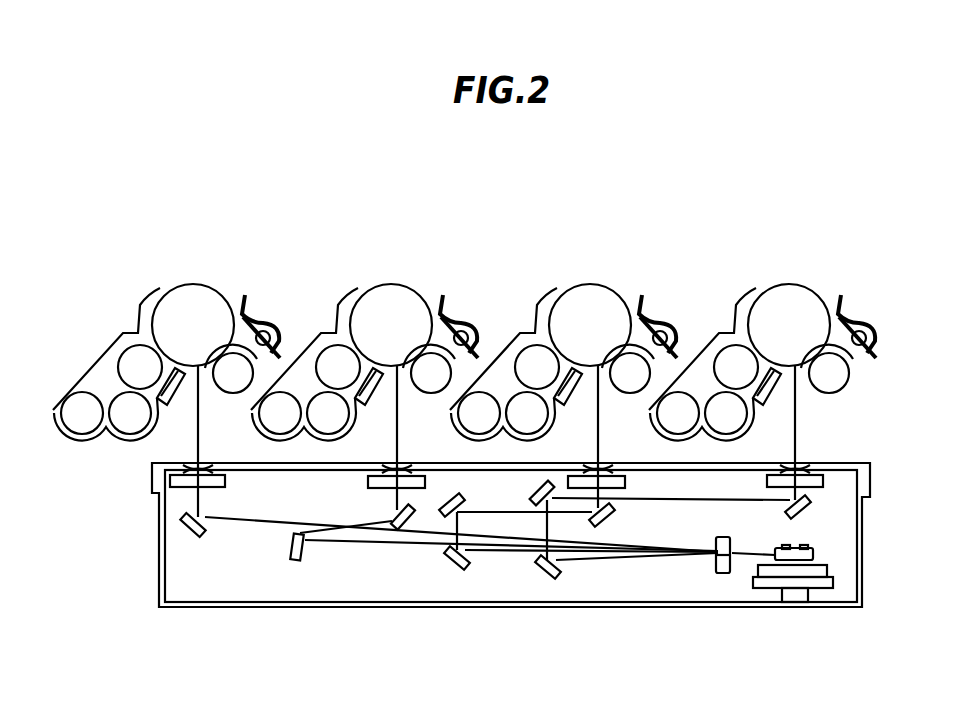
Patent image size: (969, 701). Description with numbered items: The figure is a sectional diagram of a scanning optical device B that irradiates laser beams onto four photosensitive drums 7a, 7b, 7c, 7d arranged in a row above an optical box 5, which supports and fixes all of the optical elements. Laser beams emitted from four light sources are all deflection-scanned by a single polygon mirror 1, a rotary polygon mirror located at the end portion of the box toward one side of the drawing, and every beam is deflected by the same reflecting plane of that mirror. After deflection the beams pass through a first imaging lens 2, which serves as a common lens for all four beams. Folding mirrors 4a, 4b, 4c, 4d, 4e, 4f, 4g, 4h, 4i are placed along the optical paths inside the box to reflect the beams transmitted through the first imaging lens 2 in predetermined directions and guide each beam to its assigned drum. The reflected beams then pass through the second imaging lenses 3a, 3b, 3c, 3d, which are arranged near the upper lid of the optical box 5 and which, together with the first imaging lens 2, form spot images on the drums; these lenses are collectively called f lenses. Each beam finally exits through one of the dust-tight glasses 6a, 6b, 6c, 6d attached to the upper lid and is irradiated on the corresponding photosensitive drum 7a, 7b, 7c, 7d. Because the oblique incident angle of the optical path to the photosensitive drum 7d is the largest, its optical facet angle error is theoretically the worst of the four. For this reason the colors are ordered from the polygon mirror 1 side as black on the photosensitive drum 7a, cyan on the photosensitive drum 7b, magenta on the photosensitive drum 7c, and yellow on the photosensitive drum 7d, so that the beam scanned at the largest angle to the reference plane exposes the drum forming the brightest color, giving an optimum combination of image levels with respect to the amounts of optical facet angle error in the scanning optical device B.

The polygon mirror 1 is at (800, 547).
The first imaging lens 2 is at (715, 560).
The second imaging lens 3a is at (806, 474).
The second imaging lens 3b is at (606, 474).
The second imaging lens 3c is at (406, 474).
The second imaging lens 3d is at (226, 482).
The folding mirror 4a is at (556, 575).
The folding mirror 4b is at (535, 490).
The folding mirror 4c is at (790, 512).
The folding mirror 4d is at (465, 565).
The folding mirror 4e is at (440, 518).
The folding mirror 4f is at (612, 518).
The folding mirror 4g is at (292, 558).
The folding mirror 4h is at (395, 530).
The folding mirror 4i is at (200, 535).
The optical box 5 is at (242, 614).
The dust-tight glass 6a is at (792, 466).
The dust-tight glass 6b is at (593, 466).
The dust-tight glass 6c is at (393, 466).
The dust-tight glass 6d is at (200, 464).
The photosensitive drum 7a is at (789, 325).
The photosensitive drum 7b is at (590, 325).
The photosensitive drum 7c is at (391, 325).
The photosensitive drum 7d is at (193, 325).
The scanning optical device B is at (870, 443).